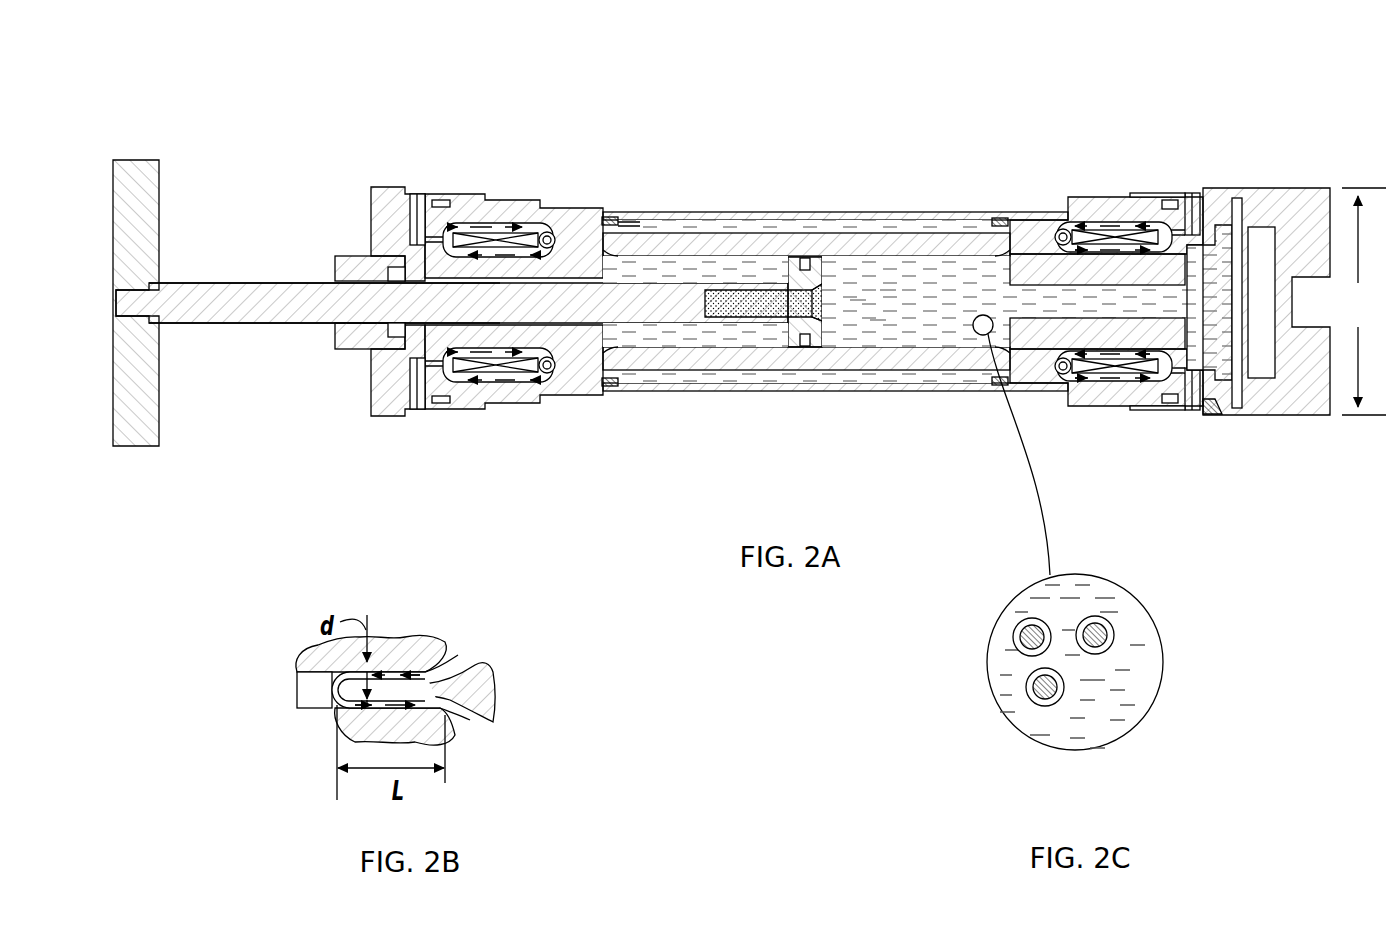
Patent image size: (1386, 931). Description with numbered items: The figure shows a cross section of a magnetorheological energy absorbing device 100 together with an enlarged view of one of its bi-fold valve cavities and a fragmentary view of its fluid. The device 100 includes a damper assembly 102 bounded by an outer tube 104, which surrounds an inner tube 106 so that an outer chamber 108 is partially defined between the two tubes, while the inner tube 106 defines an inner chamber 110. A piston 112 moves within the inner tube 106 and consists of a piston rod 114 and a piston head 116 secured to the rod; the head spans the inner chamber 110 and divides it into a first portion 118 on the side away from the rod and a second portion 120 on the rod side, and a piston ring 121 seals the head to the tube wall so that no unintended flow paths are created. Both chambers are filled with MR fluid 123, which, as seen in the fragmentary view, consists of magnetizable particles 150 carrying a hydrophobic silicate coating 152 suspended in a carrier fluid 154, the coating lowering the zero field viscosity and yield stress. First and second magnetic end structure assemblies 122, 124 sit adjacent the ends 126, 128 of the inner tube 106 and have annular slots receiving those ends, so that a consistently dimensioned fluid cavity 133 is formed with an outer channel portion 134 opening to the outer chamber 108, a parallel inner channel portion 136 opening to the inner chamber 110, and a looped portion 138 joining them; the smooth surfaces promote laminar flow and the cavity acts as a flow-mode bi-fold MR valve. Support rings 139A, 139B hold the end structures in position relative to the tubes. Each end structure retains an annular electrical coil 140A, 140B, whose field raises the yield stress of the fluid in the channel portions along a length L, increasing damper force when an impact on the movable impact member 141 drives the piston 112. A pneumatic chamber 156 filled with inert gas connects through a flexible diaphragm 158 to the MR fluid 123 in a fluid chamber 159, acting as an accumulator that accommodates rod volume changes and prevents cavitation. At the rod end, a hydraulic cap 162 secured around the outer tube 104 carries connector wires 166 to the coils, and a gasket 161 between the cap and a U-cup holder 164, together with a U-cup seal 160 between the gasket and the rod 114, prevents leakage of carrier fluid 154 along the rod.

In FIG. 2A, the magnetorheological energy absorbing device 100 is at (795, 98).
In FIG. 2A, the damper assembly 102 is at (808, 160).
In FIG. 2A, the outer tube 104 is at (962, 208).
In FIG. 2A, the inner tube 106 is at (725, 245).
In FIG. 2B, the inner tube 106 is at (470, 685).
In FIG. 2A, the outer chamber 108 is at (815, 228).
In FIG. 2A, the inner chamber 110 is at (728, 340).
In FIG. 2A, the piston 112 is at (682, 300).
In FIG. 2A, the piston rod 114 is at (452, 303).
In FIG. 2A, the piston head 116 is at (820, 335).
In FIG. 2A, the first portion 118 is at (880, 308).
In FIG. 2A, the second portion 120 is at (752, 332).
In FIG. 2A, the piston ring 121 is at (805, 345).
In FIG. 2A, the first magnetic end structure assembly 122 is at (500, 232).
In FIG. 2B, the first magnetic end structure assembly 122 is at (398, 640).
In FIG. 2A, the MR fluid 123 is at (928, 262).
In FIG. 2C, the MR fluid 123 is at (1145, 592).
In FIG. 2A, the second magnetic end structure assembly 124 is at (1145, 195).
In FIG. 2A, the end of inner tube 126 is at (547, 240).
In FIG. 2A, the end of inner tube 128 is at (1090, 232).
In FIG. 2A, the fluid cavity 133 is at (565, 230).
In FIG. 2B, the fluid cavity 133 is at (487, 653).
In FIG. 2A, the outer channel portion 134 is at (575, 230).
In FIG. 2B, the outer channel portion 134 is at (435, 673).
In FIG. 2A, the inner channel portion 136 is at (589, 252).
In FIG. 2B, the inner channel portion 136 is at (442, 708).
In FIG. 2A, the looped portion 138 is at (540, 367).
In FIG. 2B, the looped portion 138 is at (325, 680).
In FIG. 2A, the support ring 139A is at (615, 222).
In FIG. 2A, the support ring 139B is at (1000, 216).
In FIG. 2A, the annular electrical coil 140A is at (462, 238).
In FIG. 2A, the annular electrical coil 140B is at (1165, 240).
In FIG. 2A, the movable impact member 141 is at (117, 180).
In FIG. 2C, the magnetizable particles 150 is at (1112, 625).
In FIG. 2C, the silicate coating 152 is at (1022, 632).
In FIG. 2C, the carrier fluid 154 is at (1107, 717).
In FIG. 2A, the pneumatic chamber 156 is at (1258, 350).
In FIG. 2A, the flexible diaphragm 158 is at (1265, 190).
In FIG. 2A, the fluid chamber 159 is at (1203, 340).
In FIG. 2A, the U-cup seal 160 is at (358, 267).
In FIG. 2A, the gasket 161 is at (392, 272).
In FIG. 2A, the hydraulic cap 162 is at (373, 207).
In FIG. 2A, the U-cup holder 164 is at (348, 355).
In FIG. 2A, the connector wires 166 is at (413, 200).